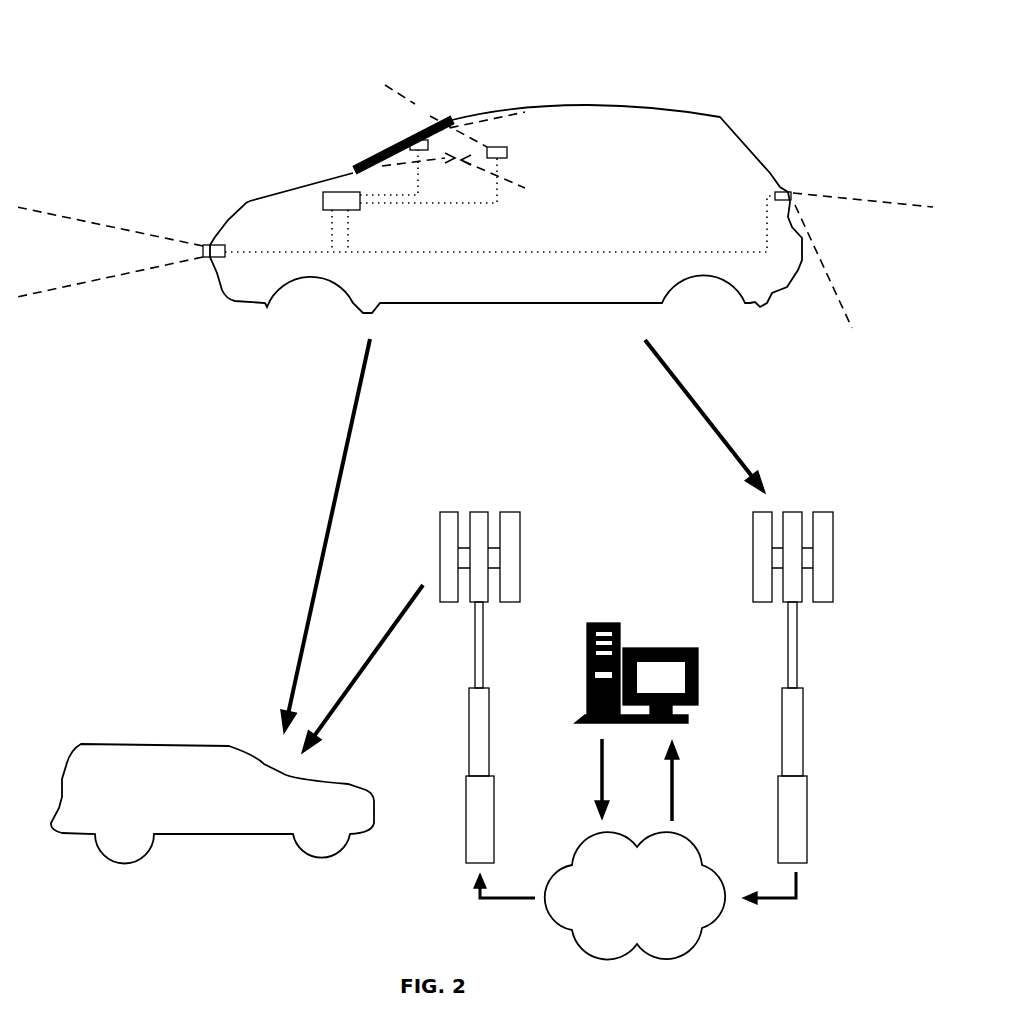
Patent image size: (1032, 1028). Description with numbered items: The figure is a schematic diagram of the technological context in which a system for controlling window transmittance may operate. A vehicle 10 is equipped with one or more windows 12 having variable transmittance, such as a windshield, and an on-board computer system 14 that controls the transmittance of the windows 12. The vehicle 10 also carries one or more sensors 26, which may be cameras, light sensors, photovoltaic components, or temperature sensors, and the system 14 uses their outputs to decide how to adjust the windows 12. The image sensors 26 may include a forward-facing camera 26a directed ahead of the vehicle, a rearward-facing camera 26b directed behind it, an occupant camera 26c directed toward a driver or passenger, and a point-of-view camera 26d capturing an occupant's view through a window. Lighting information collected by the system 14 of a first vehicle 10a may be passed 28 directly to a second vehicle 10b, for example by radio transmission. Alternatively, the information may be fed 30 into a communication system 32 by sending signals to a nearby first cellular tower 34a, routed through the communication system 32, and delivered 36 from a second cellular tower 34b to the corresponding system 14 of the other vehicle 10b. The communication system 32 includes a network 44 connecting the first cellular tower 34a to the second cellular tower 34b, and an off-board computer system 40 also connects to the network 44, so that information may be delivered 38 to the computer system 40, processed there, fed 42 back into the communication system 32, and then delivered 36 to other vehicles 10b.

The vehicle 10 is at (421, 434).
The first vehicle 10a is at (360, 43).
The second vehicle 10b is at (154, 714).
The window 12 is at (398, 145).
The computer system 14 is at (340, 198).
The sensors 26 is at (475, 178).
The forward-facing camera 26a is at (210, 245).
The rearward-facing camera 26b is at (788, 192).
The occupant camera 26c is at (418, 138).
The point-of-view camera 26d is at (498, 147).
The direct vehicle-to-vehicle passing of information 28 is at (335, 486).
The feeding of information into communication system 30 is at (683, 382).
The communication system 32 is at (687, 686).
The first cellular tower 34a is at (858, 528).
The second cellular tower 34b is at (542, 540).
The delivery of information to other vehicles 36 is at (361, 671).
The delivery of information to computer system 38 is at (675, 790).
The computer system 40 is at (671, 611).
The feeding of processed information back into communication system 42 is at (600, 783).
The network 44 is at (651, 909).